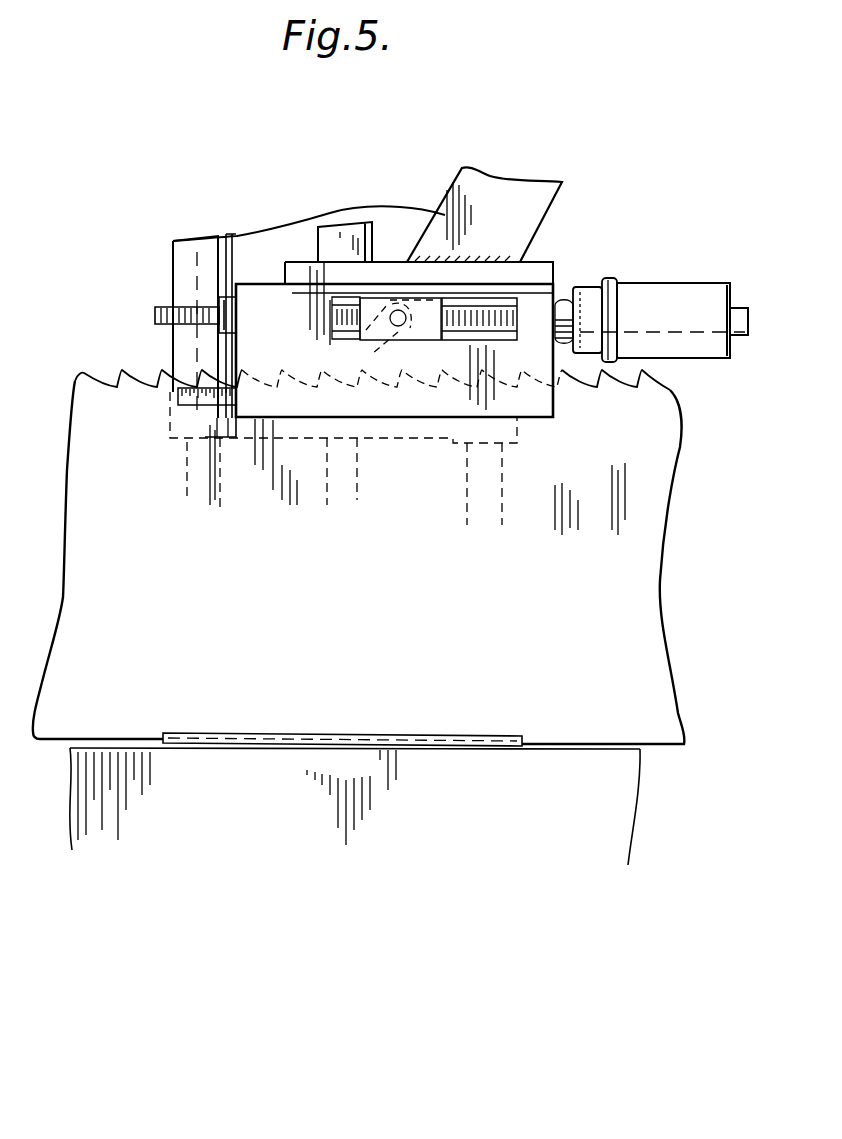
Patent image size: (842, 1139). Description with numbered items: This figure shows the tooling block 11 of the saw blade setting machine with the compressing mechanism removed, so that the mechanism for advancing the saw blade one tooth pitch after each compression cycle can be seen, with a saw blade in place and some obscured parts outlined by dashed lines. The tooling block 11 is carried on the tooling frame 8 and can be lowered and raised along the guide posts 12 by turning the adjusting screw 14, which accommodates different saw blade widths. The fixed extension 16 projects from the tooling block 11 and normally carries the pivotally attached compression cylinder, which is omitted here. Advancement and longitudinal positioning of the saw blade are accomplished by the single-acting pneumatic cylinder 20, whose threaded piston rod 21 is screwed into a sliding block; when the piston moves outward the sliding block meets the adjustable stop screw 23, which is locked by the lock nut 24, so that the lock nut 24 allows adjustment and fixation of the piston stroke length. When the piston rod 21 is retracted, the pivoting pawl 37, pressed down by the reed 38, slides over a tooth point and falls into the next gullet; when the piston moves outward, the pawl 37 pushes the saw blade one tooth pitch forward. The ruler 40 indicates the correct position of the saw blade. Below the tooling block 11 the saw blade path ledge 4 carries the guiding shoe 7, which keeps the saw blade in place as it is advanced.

The saw blade path ledge 4 is at (610, 817).
The guiding shoe 7 is at (513, 737).
The tooling frame 8 is at (298, 237).
The tooling block 11 is at (537, 403).
The guide posts 12 is at (193, 462).
The adjusting screw 14 is at (348, 480).
The fixed extension 16 is at (543, 205).
The single-acting pneumatic cylinder 20 is at (700, 255).
The threaded piston rod 21 is at (500, 313).
The adjustable stop screw 23 is at (155, 314).
The lock nut 24 is at (227, 300).
The pivoting pawl 37 is at (373, 353).
The reed 38 is at (388, 302).
The ruler 40 is at (193, 408).